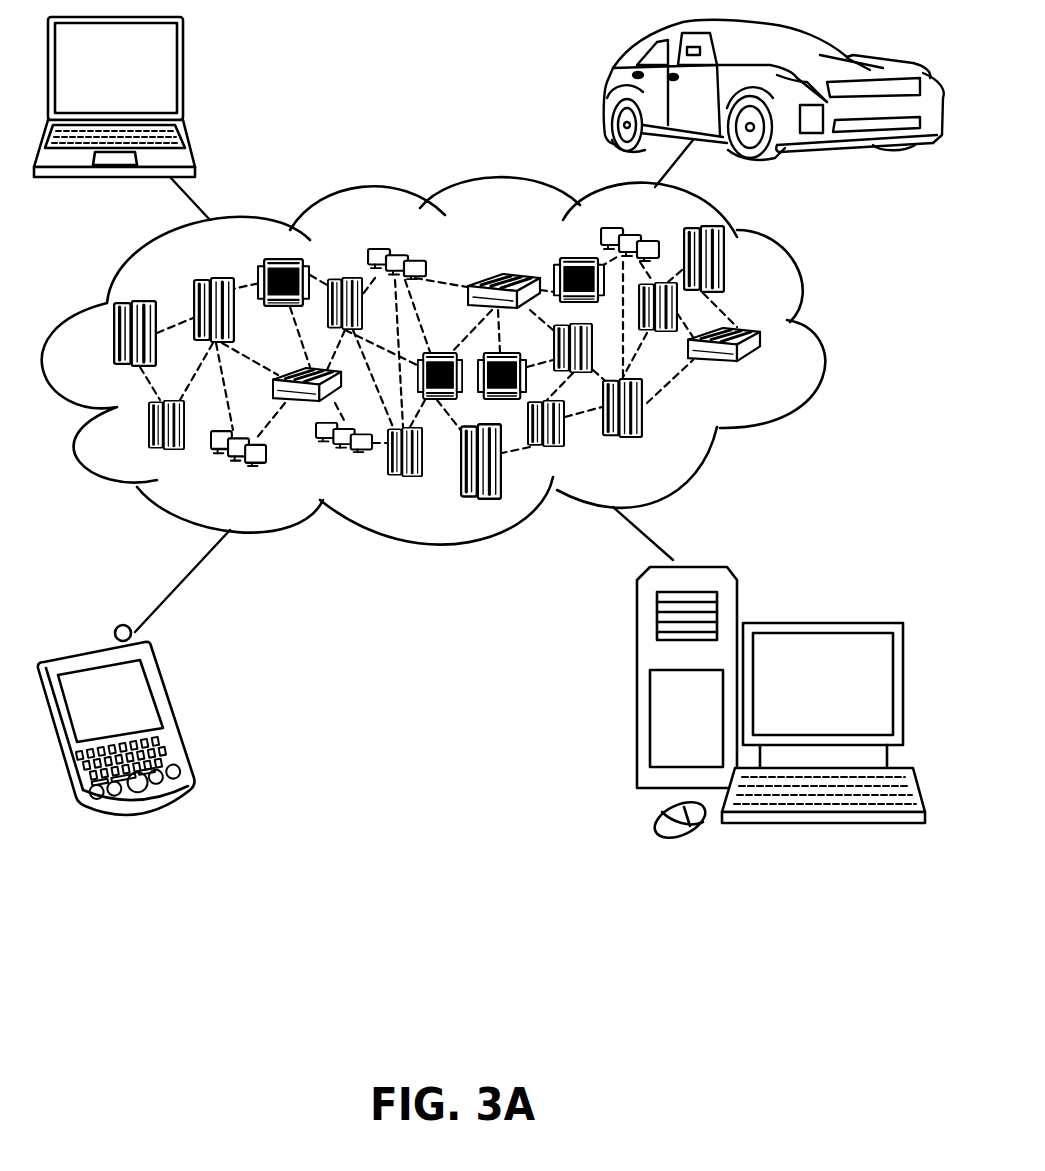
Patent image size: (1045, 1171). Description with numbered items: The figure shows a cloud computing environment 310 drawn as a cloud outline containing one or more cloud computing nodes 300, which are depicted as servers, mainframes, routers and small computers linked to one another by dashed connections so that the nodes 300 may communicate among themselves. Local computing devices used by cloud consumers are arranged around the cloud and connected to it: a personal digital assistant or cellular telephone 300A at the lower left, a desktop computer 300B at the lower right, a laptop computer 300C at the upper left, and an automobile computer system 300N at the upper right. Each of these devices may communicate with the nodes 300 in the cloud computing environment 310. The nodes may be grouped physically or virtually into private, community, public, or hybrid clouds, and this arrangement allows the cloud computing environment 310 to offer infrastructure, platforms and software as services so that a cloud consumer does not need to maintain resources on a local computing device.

The cloud computing nodes 300 is at (772, 376).
The cloud computing environment 310 is at (823, 340).
The personal digital assistant (PDA) or cellular telephone 300A is at (173, 715).
The desktop computer 300B is at (820, 622).
The laptop computer 300C is at (183, 77).
The automobile computer system 300N is at (607, 91).